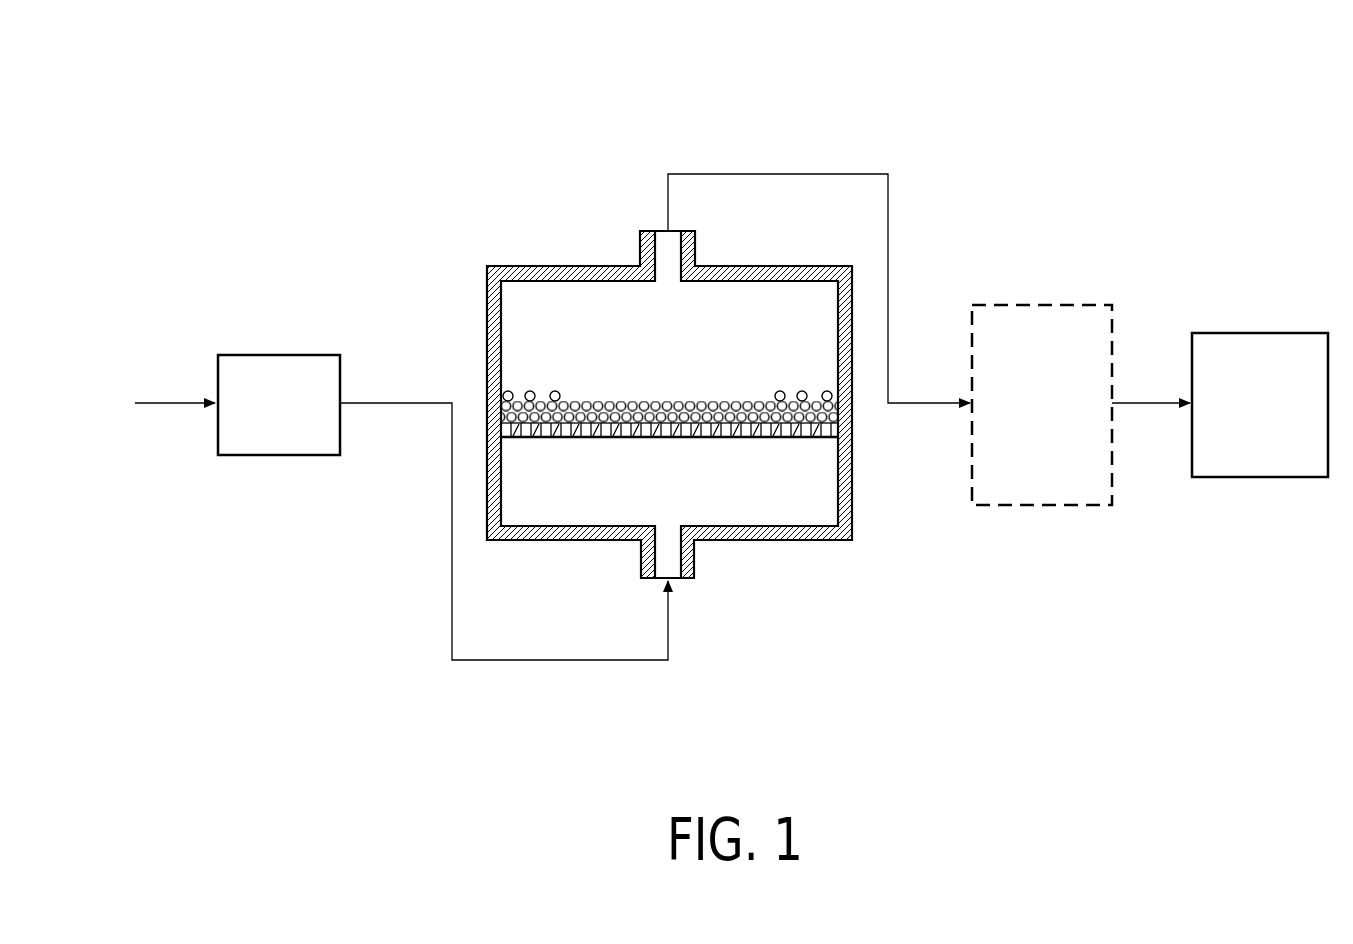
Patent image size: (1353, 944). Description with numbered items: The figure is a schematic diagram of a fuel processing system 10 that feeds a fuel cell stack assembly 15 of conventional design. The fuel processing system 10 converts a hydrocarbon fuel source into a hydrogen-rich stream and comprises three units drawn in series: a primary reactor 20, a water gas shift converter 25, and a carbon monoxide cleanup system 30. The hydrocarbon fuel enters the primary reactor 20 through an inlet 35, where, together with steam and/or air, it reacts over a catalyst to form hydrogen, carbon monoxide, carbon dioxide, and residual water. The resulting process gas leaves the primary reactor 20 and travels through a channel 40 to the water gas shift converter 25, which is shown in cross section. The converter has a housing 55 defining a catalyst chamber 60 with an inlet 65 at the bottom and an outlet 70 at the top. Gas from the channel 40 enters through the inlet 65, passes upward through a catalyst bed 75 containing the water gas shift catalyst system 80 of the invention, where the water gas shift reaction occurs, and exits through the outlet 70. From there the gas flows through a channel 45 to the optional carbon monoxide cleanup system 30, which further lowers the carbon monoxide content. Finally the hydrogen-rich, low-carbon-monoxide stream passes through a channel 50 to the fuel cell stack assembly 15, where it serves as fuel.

The fuel processing system 10 is at (1137, 148).
The fuel cell stack assembly 15 is at (1262, 332).
The primary reactor 20 is at (277, 353).
The water gas shift converter 25 is at (683, 364).
The carbon monoxide cleanup system 30 is at (1032, 306).
The inlet 35 is at (162, 403).
The channel 40 is at (562, 660).
The channel 45 is at (778, 174).
The channel 50 is at (1145, 403).
The housing 55 is at (853, 490).
The catalyst chamber 60 is at (660, 353).
The inlet 65 is at (697, 558).
The outlet 70 is at (697, 251).
The catalyst bed 75 is at (527, 395).
The water gas shift catalyst system 80 is at (787, 393).